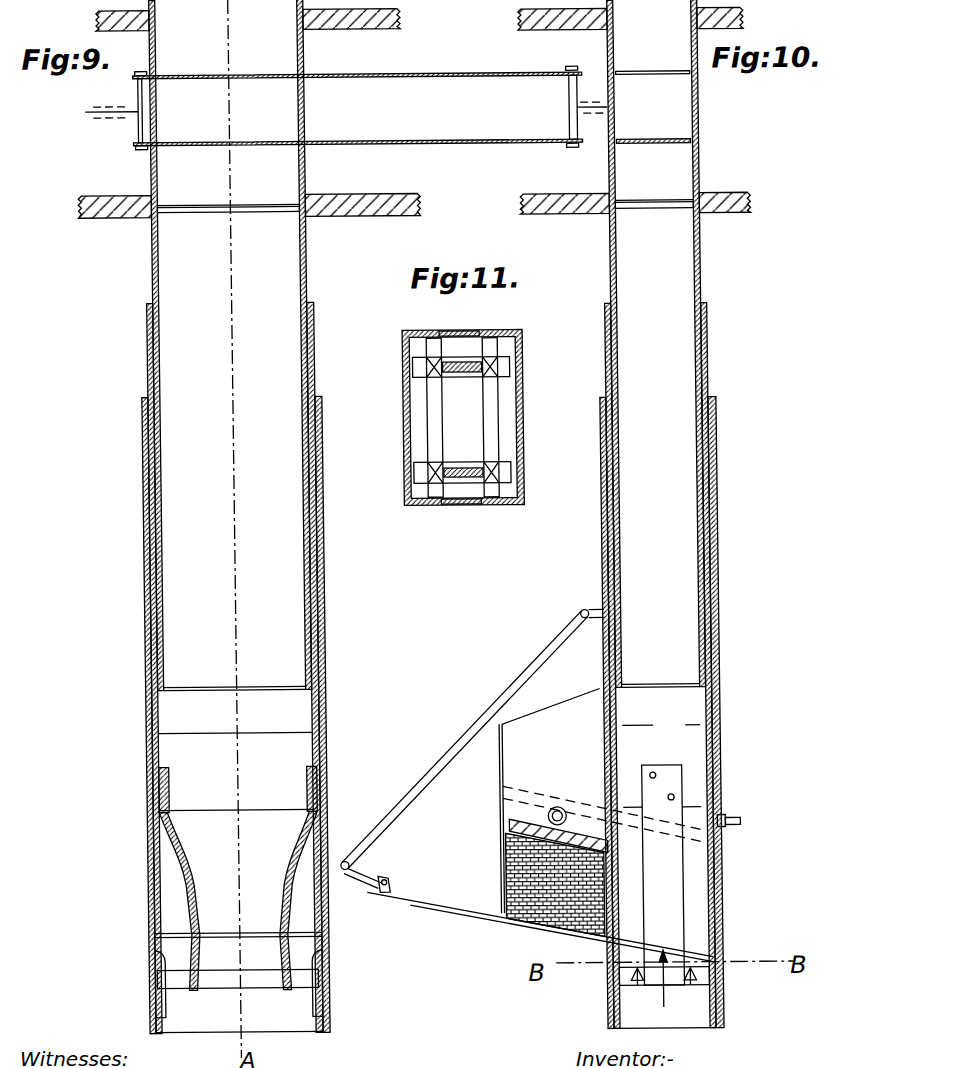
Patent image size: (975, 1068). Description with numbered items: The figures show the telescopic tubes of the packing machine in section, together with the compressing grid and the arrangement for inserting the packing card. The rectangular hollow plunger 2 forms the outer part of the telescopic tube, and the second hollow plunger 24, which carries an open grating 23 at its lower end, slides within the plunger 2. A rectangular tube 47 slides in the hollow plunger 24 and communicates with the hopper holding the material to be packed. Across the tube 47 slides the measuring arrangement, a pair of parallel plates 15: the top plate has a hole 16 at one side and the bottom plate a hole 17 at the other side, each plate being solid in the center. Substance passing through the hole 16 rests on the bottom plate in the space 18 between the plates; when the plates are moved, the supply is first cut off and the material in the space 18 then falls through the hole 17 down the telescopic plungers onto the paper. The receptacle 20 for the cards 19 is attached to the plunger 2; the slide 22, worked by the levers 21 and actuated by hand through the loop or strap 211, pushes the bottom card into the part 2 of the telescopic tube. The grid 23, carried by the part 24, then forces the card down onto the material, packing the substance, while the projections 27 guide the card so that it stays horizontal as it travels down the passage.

In FIG. 9, the hollow plunger 2 is at (138, 845).
In FIG. 10, the hollow plunger 2 is at (705, 846).
In FIG. 11, the hollow plunger 2 is at (524, 358).
In FIG. 9, the parallel plates 15 is at (360, 142).
In FIG. 10, the parallel plates 15 is at (690, 74).
In FIG. 9, the hole 16 is at (356, 64).
In FIG. 10, the hole 16 is at (652, 61).
In FIG. 9, the hole 17 is at (522, 147).
In FIG. 9, the space 18 is at (153, 110).
In FIG. 10, the space 18 is at (653, 107).
In FIG. 10, the cards 19 is at (508, 893).
In FIG. 10, the receptacle 20 is at (539, 826).
In FIG. 10, the levers 21 is at (389, 806).
In FIG. 10, the slide 22 is at (375, 897).
In FIG. 9, the grating 23 is at (210, 980).
In FIG. 10, the grating 23 is at (625, 981).
In FIG. 11, the grating 23 is at (490, 423).
In FIG. 9, the second hollow plunger 24 is at (235, 742).
In FIG. 10, the second hollow plunger 24 is at (661, 733).
In FIG. 9, the projections 27 is at (154, 1005).
In FIG. 10, the projections 27 is at (666, 992).
In FIG. 11, the projections 27 is at (470, 338).
In FIG. 9, the rectangular tube 47 is at (150, 183).
In FIG. 10, the rectangular tube 47 is at (699, 183).
In FIG. 10, the loop or strap 211 is at (722, 812).